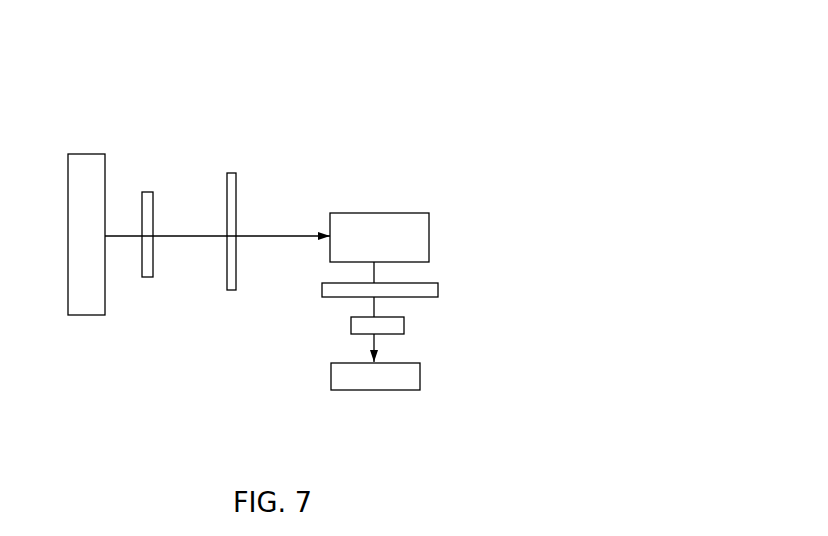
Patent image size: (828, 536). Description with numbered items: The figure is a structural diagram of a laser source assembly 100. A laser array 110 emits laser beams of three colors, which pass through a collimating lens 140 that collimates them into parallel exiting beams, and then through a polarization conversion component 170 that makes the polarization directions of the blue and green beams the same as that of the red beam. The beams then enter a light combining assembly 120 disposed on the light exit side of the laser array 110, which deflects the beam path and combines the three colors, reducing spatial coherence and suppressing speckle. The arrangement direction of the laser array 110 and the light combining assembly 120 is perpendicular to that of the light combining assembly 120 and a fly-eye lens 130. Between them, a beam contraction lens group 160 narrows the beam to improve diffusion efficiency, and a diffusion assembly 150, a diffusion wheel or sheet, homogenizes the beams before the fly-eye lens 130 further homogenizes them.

The laser source assembly 100 is at (72, 46).
The laser array 110 is at (85, 154).
The light combining assembly 120 is at (379, 213).
The fly-eye lens 130 is at (420, 379).
The collimating lens 140 is at (149, 277).
The diffusion assembly 150 is at (404, 327).
The beam contraction lens group 160 is at (438, 290).
The polarization conversion component 170 is at (232, 290).